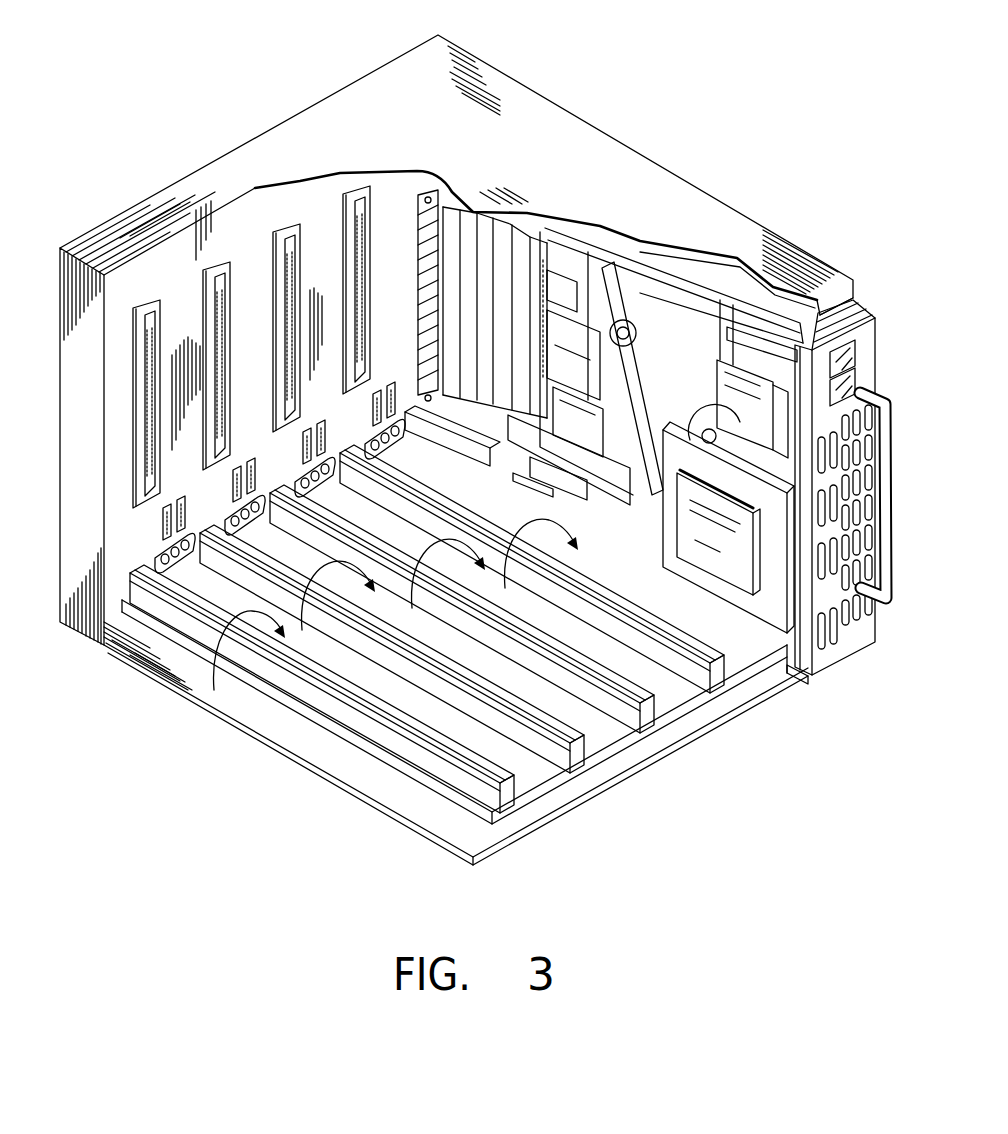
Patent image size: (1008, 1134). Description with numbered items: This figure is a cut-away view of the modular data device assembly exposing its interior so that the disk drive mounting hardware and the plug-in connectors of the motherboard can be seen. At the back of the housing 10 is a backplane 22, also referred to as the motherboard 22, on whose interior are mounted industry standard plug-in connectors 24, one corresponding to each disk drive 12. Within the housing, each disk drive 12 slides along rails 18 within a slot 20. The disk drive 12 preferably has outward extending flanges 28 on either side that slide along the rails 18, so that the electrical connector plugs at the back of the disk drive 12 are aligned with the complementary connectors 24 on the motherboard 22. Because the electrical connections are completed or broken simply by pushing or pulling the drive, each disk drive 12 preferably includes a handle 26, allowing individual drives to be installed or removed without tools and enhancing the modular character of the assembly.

The housing 10 is at (562, 86).
The disk drive 12 is at (845, 648).
The rails 18 is at (655, 718).
The slot 20 is at (392, 608).
The backplane 22 is at (230, 231).
The plug-in connectors 24 is at (373, 207).
The handle 26 is at (895, 437).
The flanges 28 is at (682, 262).